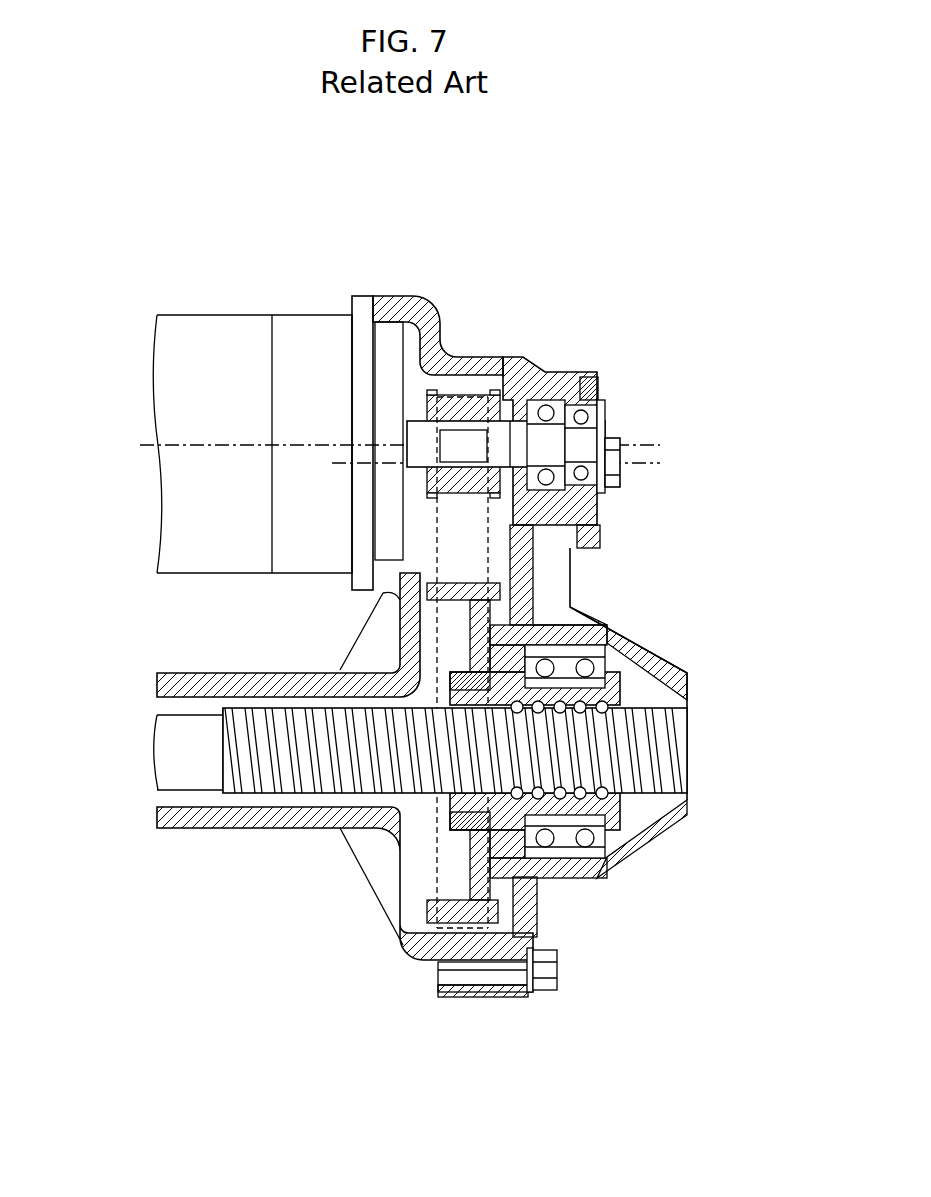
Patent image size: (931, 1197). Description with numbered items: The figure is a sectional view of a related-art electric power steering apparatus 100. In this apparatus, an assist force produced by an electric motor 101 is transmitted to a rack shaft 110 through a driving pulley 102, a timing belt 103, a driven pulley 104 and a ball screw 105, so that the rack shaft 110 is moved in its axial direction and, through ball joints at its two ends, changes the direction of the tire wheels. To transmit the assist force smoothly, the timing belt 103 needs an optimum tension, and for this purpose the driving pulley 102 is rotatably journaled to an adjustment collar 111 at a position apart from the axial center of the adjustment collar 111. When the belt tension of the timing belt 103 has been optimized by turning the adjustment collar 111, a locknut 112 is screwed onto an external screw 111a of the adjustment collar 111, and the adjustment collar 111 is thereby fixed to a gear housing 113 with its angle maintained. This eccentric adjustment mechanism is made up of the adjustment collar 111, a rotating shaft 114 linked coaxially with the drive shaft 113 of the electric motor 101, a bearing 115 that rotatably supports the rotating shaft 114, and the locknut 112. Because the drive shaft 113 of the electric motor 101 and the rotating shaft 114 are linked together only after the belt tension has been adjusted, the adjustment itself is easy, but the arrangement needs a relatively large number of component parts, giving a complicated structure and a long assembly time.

The electric power steering apparatus 100 is at (442, 322).
The electric motor 101 is at (222, 335).
The driving pulley 102 is at (420, 408).
The timing belt 103 is at (440, 638).
The driven pulley 104 is at (440, 918).
The ball screw 105 is at (622, 674).
The rack shaft 110 is at (177, 767).
The adjustment collar 111 is at (602, 432).
The external screw 111a is at (600, 390).
The locknut 112 is at (592, 377).
The drive shaft 113 is at (440, 412).
The rotating shaft 114 is at (624, 464).
The bearing 115 is at (600, 404).